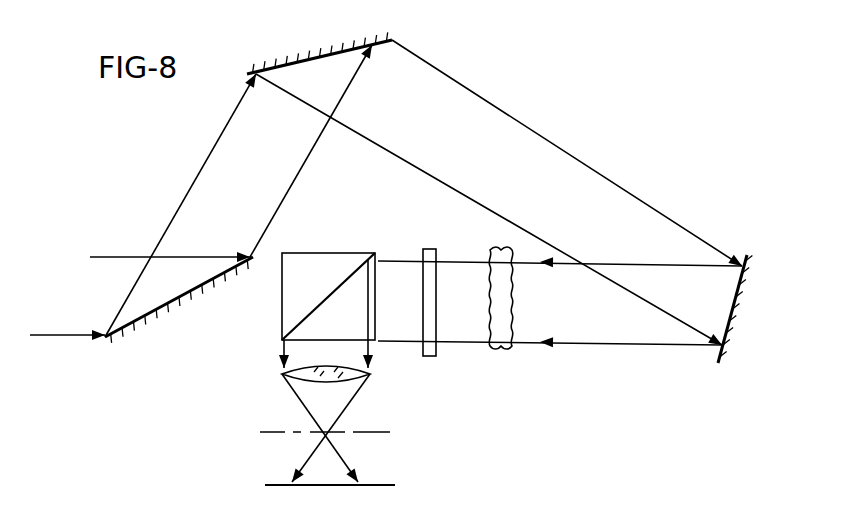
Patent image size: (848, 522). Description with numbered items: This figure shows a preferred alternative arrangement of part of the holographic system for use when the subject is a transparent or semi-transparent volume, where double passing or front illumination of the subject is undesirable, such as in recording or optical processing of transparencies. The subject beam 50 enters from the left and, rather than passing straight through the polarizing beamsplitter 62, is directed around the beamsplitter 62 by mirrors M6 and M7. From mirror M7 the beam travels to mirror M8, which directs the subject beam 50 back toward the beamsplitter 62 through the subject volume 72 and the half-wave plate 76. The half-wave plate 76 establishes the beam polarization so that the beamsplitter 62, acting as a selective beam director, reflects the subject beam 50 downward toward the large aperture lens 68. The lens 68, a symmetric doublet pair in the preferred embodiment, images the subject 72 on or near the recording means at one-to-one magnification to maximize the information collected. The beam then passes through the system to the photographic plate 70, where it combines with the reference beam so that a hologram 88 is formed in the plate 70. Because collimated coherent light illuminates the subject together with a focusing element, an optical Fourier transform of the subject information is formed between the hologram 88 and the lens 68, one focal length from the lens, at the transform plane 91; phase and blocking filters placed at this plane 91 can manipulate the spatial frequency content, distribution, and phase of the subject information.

The subject beam 50 is at (93, 302).
The mirror M6 is at (128, 335).
The mirror M7 is at (284, 60).
The mirror M8 is at (733, 340).
The polarizing beamsplitter 62 is at (325, 253).
The large aperture lens 68 is at (340, 380).
The half-wave plate 76 is at (428, 357).
The subject volume 72 is at (505, 357).
The transform plane 91 is at (281, 430).
The photographic plate 70 is at (381, 485).
The hologram 88 is at (373, 485).